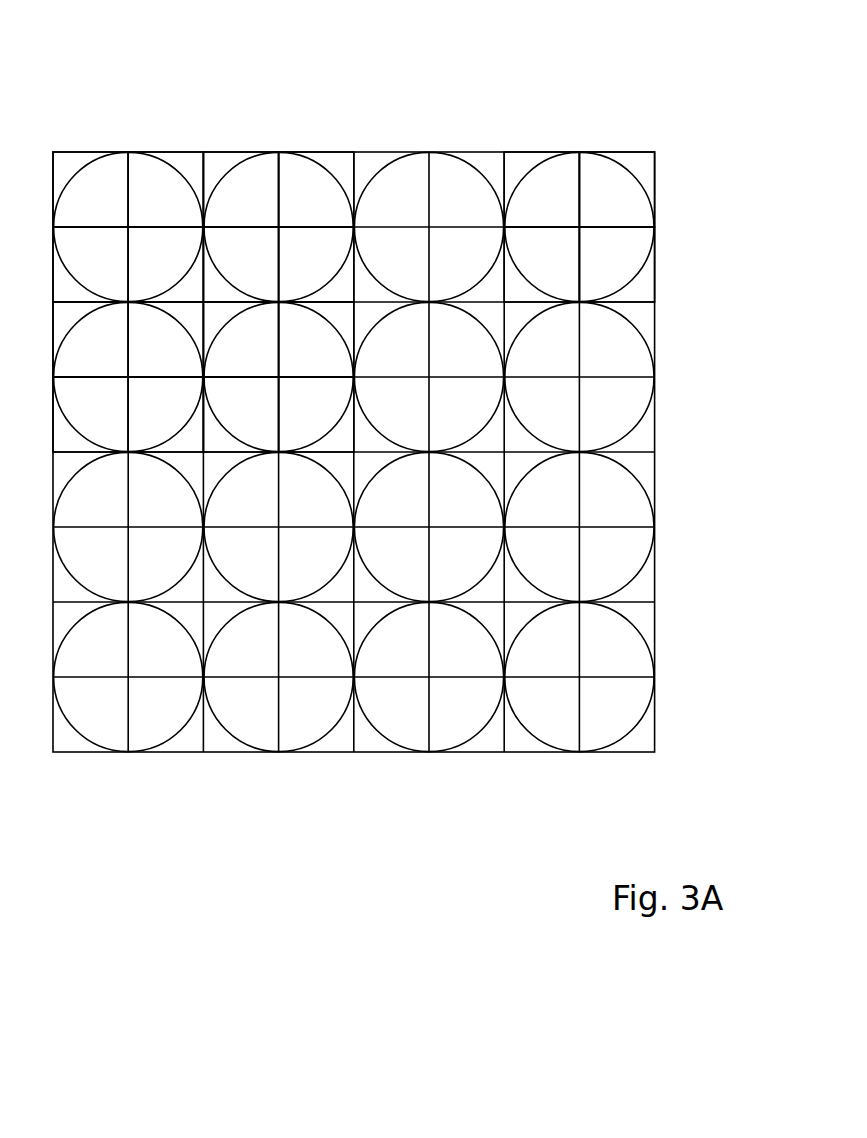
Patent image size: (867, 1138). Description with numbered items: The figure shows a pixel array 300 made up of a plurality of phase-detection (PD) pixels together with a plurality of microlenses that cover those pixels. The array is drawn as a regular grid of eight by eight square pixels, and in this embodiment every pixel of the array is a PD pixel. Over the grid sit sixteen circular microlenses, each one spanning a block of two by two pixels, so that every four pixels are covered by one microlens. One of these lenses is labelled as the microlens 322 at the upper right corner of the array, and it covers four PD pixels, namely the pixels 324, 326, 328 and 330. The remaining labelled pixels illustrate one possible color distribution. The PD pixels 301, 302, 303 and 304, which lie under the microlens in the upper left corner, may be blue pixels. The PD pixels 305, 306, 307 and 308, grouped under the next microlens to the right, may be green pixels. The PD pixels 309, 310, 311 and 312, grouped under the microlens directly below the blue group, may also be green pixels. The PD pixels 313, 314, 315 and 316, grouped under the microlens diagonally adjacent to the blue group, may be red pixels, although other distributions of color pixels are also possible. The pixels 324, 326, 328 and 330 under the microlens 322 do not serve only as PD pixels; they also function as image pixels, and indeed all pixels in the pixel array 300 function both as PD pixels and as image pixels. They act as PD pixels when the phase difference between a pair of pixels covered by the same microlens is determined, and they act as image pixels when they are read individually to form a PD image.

The pixel array 300 is at (125, 70).
The microlens 322 is at (646, 192).
The PD pixel 301 is at (113, 214).
The PD pixel 302 is at (185, 214).
The PD pixel 303 is at (113, 270).
The PD pixel 304 is at (180, 267).
The PD pixel 305 is at (267, 214).
The PD pixel 306 is at (333, 214).
The PD pixel 307 is at (265, 262).
The PD pixel 308 is at (333, 262).
The PD pixel 309 is at (110, 362).
The PD pixel 310 is at (180, 362).
The PD pixel 311 is at (110, 412).
The PD pixel 312 is at (180, 412).
The PD pixel 313 is at (265, 361).
The PD pixel 314 is at (332, 361).
The PD pixel 315 is at (270, 416).
The PD pixel 316 is at (330, 416).
The pixel 324 is at (562, 214).
The pixel 326 is at (633, 212).
The pixel 328 is at (565, 267).
The pixel 330 is at (632, 267).